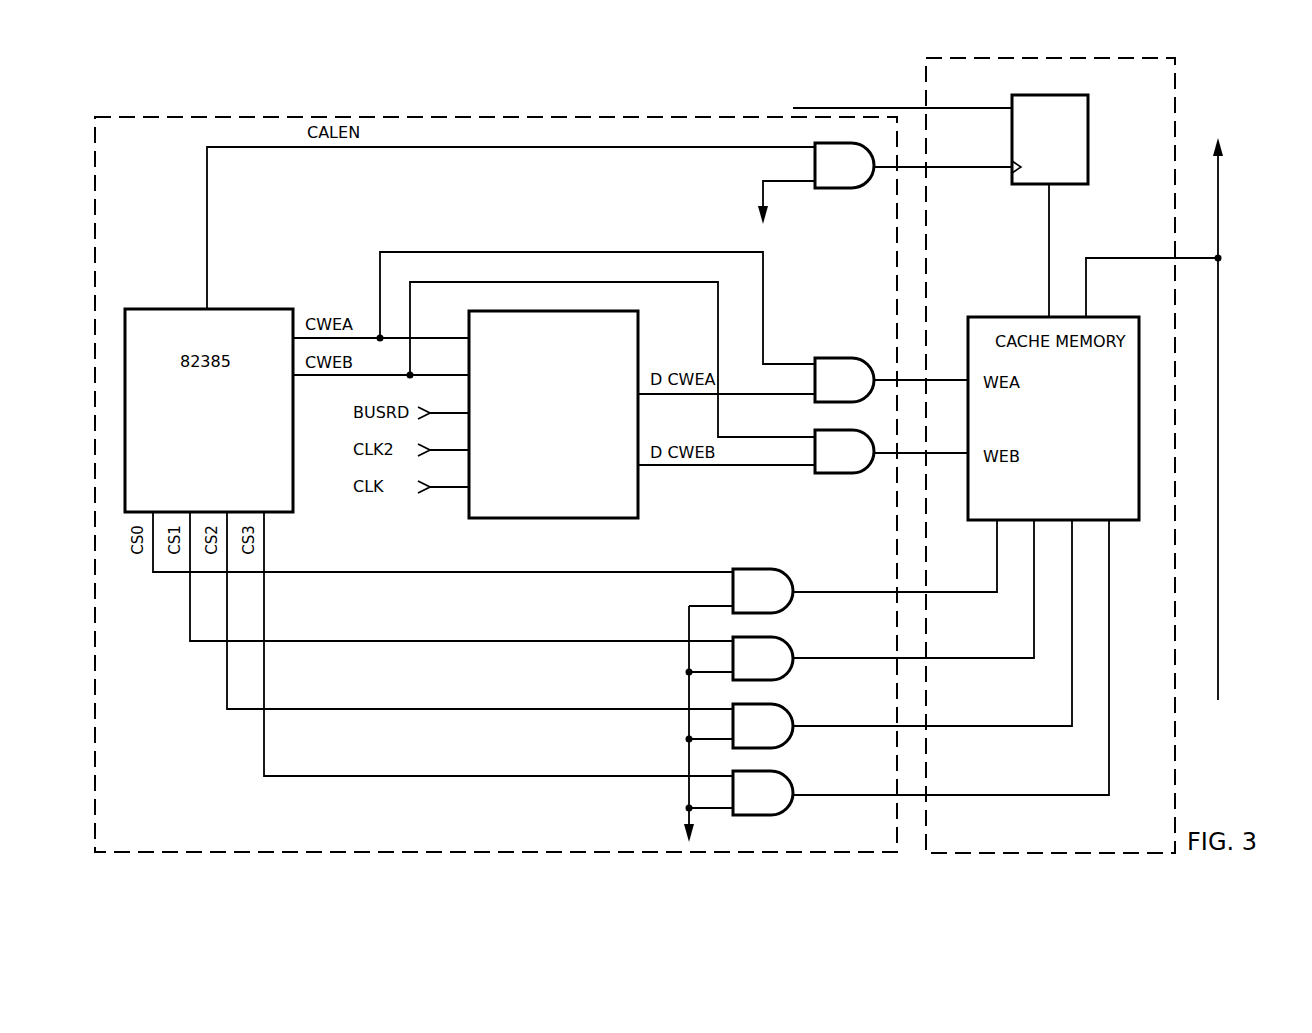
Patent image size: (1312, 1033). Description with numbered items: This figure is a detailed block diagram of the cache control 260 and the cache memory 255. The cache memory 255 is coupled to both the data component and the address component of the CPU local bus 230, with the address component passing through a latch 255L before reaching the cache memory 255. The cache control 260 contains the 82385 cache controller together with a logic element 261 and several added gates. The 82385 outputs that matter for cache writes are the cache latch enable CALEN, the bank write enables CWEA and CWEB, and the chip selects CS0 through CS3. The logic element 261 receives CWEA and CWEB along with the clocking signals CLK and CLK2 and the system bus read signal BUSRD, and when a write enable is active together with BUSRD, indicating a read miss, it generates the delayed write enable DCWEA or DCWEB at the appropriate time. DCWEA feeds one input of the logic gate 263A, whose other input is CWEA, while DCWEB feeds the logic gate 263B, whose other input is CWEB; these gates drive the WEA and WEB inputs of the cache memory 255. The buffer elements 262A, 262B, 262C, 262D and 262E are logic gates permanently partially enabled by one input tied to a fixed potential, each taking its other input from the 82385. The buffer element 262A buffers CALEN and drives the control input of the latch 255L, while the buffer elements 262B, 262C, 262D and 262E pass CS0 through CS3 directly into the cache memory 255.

The CPU local bus 230 is at (905, 108).
The cache memory 255 is at (1090, 58).
The latch 255L is at (1088, 117).
The cache control 260 is at (418, 117).
The logic element 261 is at (538, 518).
The buffer element 262A is at (826, 188).
The buffer element 262B is at (778, 613).
The buffer element 262C is at (778, 680).
The buffer element 262D is at (778, 748).
The buffer element 262E is at (778, 815).
The logic gate 263A is at (843, 358).
The logic gate 263B is at (824, 473).